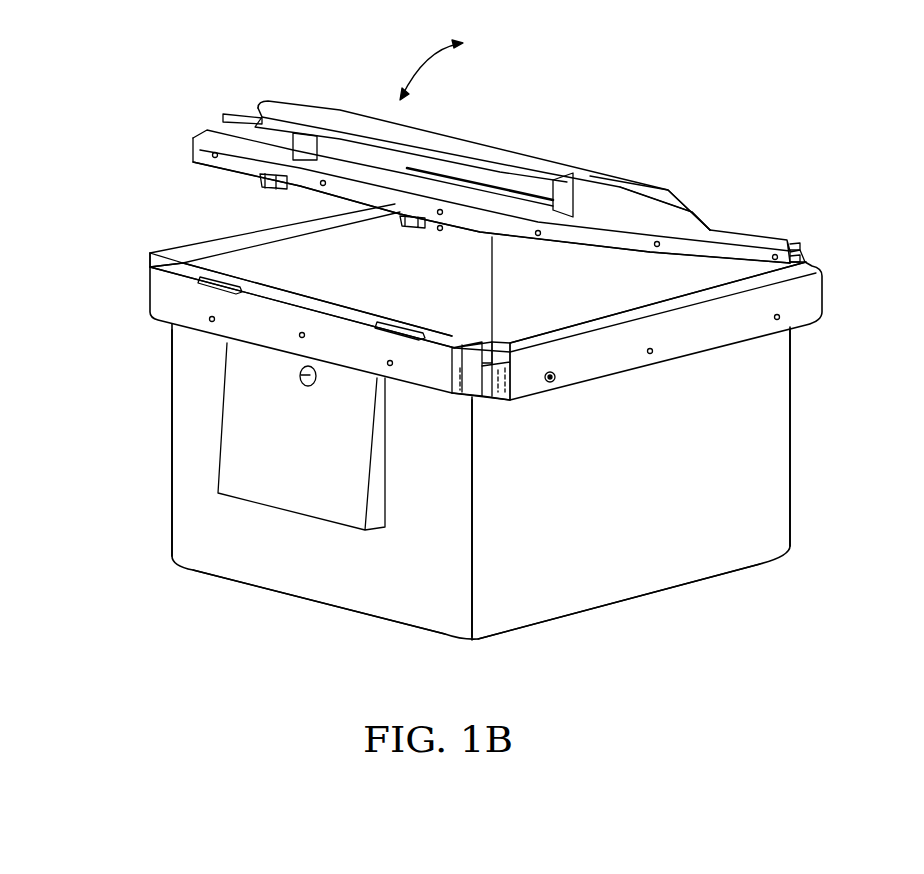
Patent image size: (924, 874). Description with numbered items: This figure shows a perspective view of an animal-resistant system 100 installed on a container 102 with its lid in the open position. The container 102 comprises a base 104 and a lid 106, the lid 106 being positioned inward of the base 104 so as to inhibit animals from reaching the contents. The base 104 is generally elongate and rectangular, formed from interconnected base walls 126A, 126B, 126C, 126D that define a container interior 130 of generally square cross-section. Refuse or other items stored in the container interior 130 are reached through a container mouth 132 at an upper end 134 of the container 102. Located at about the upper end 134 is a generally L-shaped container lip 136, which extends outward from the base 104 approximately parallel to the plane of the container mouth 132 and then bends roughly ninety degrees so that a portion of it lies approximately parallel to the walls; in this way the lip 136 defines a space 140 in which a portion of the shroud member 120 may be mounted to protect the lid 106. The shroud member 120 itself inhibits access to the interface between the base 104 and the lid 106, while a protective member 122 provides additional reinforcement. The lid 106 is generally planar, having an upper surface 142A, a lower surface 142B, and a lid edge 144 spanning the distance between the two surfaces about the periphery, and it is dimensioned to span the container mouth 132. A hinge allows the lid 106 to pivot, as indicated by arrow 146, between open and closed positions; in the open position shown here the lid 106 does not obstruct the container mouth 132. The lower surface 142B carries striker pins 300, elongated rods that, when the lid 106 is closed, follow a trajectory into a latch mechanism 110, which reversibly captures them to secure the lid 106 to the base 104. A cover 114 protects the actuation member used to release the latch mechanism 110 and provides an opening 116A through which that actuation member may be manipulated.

The animal-resistant system 100 is at (213, 85).
The container 102 is at (733, 226).
The base 104 is at (790, 500).
The lid 106 is at (436, 136).
The latch mechanism 110 is at (180, 270).
The cover 114 is at (321, 456).
The opening 116A is at (302, 378).
The shroud member 120 is at (806, 297).
The protective member 122 is at (238, 166).
The base wall 126A is at (790, 443).
The base wall 126B is at (373, 585).
The base wall 126C is at (700, 550).
The base wall 126D is at (172, 487).
The container interior 130 is at (460, 289).
The container mouth 132 is at (628, 291).
The upper end 134 is at (129, 257).
The container lip 136 is at (487, 398).
The space 140 is at (460, 398).
The upper surface 142A is at (590, 177).
The lower surface 142B is at (797, 264).
The lid edge 144 is at (186, 138).
The arrow 146 is at (416, 68).
The striker pins 300 is at (402, 218).